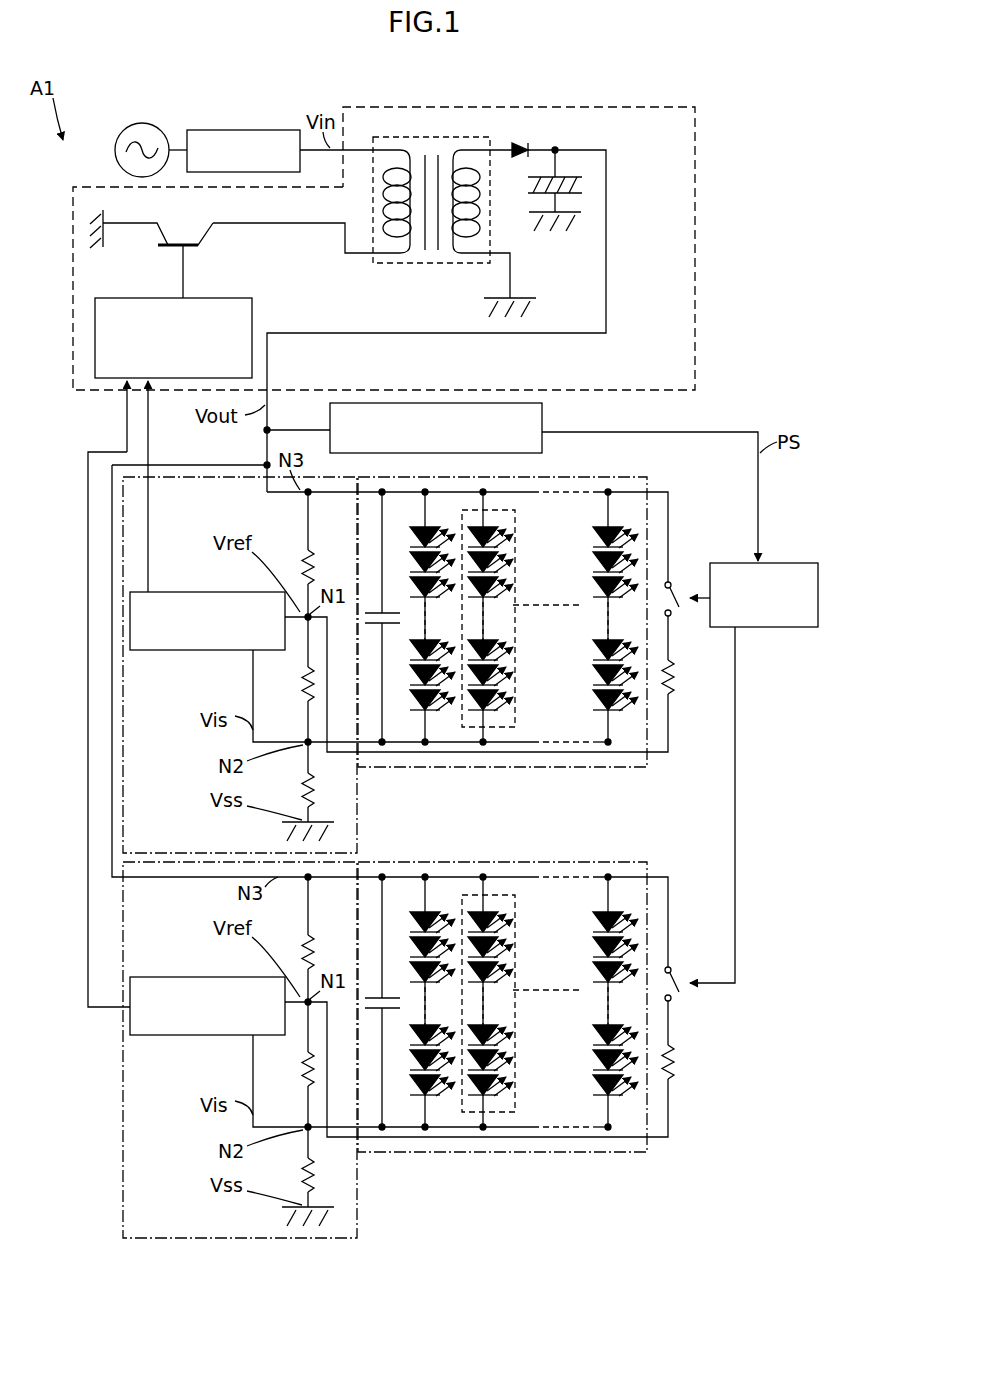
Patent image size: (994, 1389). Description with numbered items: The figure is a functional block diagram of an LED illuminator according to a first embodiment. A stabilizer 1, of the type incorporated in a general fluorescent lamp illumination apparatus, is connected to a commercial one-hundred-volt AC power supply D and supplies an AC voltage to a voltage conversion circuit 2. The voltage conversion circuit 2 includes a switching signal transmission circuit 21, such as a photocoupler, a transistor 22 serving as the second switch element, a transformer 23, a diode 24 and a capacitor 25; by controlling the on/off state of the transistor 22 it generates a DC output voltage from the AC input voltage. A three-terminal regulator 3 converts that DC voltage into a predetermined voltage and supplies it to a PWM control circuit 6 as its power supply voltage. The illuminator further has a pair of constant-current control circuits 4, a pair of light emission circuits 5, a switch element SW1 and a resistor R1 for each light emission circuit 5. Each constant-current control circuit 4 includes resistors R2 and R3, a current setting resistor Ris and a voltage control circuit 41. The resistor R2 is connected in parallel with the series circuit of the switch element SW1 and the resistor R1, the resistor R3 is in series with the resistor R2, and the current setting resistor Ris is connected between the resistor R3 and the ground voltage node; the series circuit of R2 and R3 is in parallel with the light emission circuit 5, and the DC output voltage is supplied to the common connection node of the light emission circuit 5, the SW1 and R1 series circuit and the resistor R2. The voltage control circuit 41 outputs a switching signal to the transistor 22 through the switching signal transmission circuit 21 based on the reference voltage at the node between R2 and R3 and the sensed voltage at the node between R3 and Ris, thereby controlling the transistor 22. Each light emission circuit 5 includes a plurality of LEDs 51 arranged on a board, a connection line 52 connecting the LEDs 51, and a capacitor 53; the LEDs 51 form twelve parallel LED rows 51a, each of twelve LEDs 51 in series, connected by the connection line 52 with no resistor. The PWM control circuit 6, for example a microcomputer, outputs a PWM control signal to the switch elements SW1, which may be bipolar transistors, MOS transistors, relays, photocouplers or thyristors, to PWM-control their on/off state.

The stabilizer 1 is at (250, 130).
The voltage conversion circuit 2 is at (695, 204).
The three-terminal regulator 3 is at (542, 426).
The constant-current control circuit 4 is at (359, 818).
The light emission circuit 5 is at (528, 767).
The PWM control circuit 6 is at (767, 628).
The switching signal transmission circuit 21 is at (252, 300).
The transistor 22 is at (194, 247).
The transformer 23 is at (415, 263).
The diode 24 is at (530, 142).
The capacitor 25 is at (582, 185).
The voltage control circuit 41 is at (183, 592).
The LED 51 is at (610, 714).
The LED row 51a is at (493, 757).
The connection line 52 is at (440, 746).
The capacitor 53 is at (386, 628).
The AC power supply D is at (150, 123).
The resistor R1 is at (673, 677).
The resistor R2 is at (304, 556).
The resistor R3 is at (302, 690).
The current setting resistor Ris is at (300, 797).
The switch element SW1 is at (675, 581).